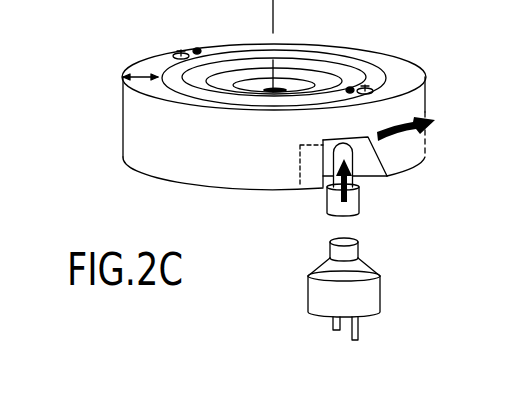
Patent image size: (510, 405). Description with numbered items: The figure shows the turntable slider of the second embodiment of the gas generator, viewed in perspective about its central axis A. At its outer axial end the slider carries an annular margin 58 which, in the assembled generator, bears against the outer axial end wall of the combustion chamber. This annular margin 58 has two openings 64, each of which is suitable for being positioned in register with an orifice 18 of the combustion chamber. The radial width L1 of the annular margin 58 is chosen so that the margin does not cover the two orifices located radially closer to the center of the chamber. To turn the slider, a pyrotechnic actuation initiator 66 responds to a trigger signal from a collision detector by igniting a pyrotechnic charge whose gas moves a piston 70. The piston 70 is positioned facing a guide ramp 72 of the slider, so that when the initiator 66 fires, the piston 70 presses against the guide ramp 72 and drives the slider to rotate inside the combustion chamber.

The annular margin 58 is at (401, 70).
The openings 64 is at (182, 54).
The orifice 18 is at (198, 48).
The guide ramp 72 is at (368, 164).
The piston 70 is at (333, 205).
The pyrotechnic actuation initiator 66 is at (373, 292).
The radial width L1 is at (140, 76).
The axis A is at (273, 12).